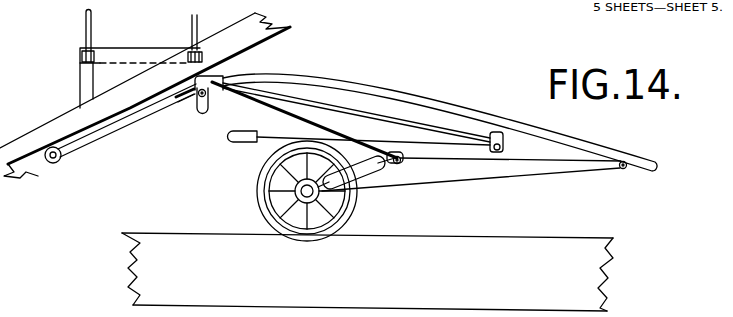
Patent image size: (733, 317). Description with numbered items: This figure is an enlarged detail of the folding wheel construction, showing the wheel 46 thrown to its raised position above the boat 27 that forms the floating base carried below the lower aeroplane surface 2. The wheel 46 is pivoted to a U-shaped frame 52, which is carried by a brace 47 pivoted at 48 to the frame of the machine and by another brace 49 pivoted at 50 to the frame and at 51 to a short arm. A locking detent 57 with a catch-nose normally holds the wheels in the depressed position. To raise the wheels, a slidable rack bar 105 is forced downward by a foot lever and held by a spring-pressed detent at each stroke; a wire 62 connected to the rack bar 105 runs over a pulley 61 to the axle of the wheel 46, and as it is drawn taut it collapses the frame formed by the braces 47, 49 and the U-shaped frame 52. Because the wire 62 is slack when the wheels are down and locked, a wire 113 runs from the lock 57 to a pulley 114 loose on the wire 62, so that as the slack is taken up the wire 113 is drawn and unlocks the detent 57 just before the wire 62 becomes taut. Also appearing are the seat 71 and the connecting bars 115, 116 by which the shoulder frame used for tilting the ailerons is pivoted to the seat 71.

The aeroplane surface 2 is at (475, 110).
The boat 27 is at (524, 233).
The wheel 46 is at (343, 213).
The brace 47 is at (551, 172).
The pivot 48 is at (626, 169).
The brace 49 is at (211, 87).
The pivot 50 is at (212, 78).
The pivot 51 is at (389, 163).
The U-shaped frame 52 is at (330, 182).
The locking detent 57 is at (400, 164).
The pulley 61 is at (199, 113).
The wire 62 is at (113, 137).
The seat 71 is at (128, 55).
The slidable rack bar 105 is at (51, 163).
The wire 113 is at (463, 159).
The pulley 114 is at (236, 143).
The connecting bar 115 is at (202, 13).
The connecting bar 116 is at (85, 17).